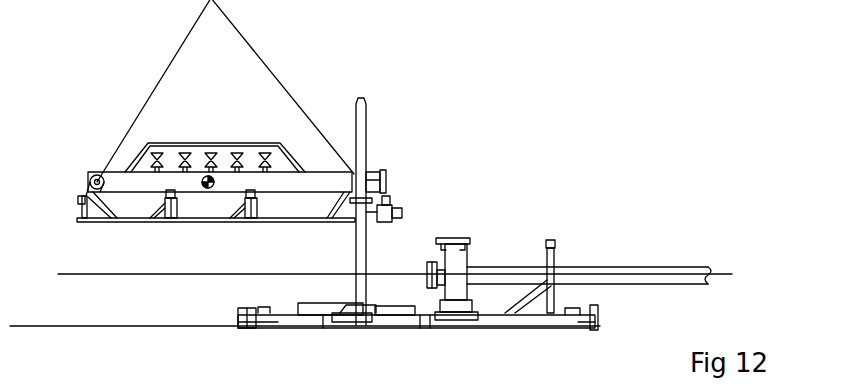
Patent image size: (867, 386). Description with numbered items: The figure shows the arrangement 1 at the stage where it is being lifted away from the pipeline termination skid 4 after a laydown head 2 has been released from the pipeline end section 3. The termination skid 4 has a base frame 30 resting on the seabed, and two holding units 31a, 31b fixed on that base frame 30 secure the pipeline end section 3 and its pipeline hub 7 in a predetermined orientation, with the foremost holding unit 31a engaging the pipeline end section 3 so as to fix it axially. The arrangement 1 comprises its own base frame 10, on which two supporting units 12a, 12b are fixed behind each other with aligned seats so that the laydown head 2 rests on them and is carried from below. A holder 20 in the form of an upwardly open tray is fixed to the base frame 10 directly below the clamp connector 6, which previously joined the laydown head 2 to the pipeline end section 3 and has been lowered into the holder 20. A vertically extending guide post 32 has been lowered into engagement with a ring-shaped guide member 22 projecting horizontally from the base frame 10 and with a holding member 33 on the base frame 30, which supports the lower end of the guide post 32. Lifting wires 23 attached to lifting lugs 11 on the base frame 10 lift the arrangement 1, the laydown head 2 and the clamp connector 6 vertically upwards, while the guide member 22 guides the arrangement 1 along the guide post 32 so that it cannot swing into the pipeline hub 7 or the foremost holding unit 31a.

The arrangement 1 is at (84, 233).
The laydown head 2 is at (330, 173).
The pipeline end section 3 is at (508, 264).
The pipeline termination skid 4 is at (546, 338).
The clamp connector 6 is at (387, 203).
The pipeline hub 7 is at (426, 266).
The base frame 10 is at (130, 222).
The lifting lugs 11 is at (76, 218).
The supporting unit 12a is at (261, 207).
The supporting unit 12b is at (181, 207).
The holder 20 is at (382, 222).
The guide member 22 is at (348, 222).
The lifting wires 23 is at (152, 88).
The base frame 30 is at (493, 322).
The holding unit 31a is at (456, 232).
The holding unit 31b is at (553, 234).
The guide post 32 is at (366, 118).
The holding member 33 is at (355, 318).